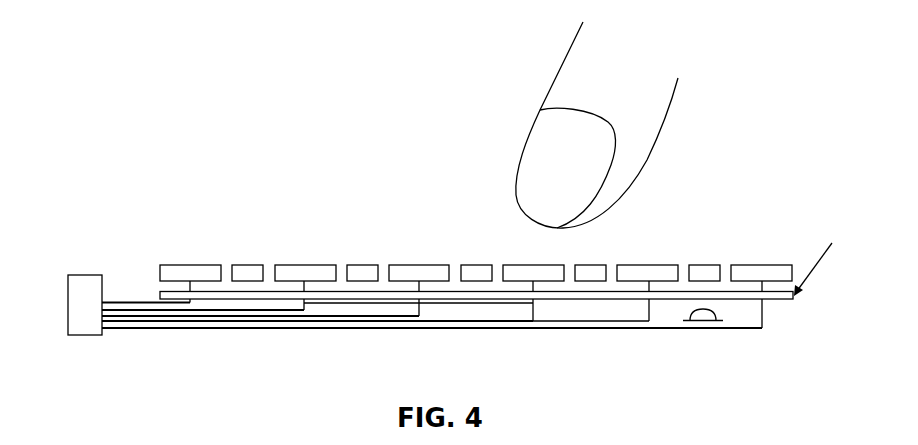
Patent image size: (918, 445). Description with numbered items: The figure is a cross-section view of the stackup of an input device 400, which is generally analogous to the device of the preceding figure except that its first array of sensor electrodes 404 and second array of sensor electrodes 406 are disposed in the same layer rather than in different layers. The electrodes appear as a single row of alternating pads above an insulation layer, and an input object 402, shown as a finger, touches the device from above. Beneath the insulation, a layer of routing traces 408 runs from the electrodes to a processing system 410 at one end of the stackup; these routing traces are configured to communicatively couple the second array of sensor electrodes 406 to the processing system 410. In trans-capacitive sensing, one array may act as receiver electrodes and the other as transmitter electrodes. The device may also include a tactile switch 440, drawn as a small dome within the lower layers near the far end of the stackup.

The input device 400 is at (145, 147).
The finger 402 is at (553, 82).
The first array of sensor electrodes 404 is at (248, 264).
The second array of sensor electrodes 406 is at (419, 263).
The layer of routing traces 408 is at (186, 330).
The processing system 410 is at (85, 273).
The tactile switch 440 is at (722, 318).